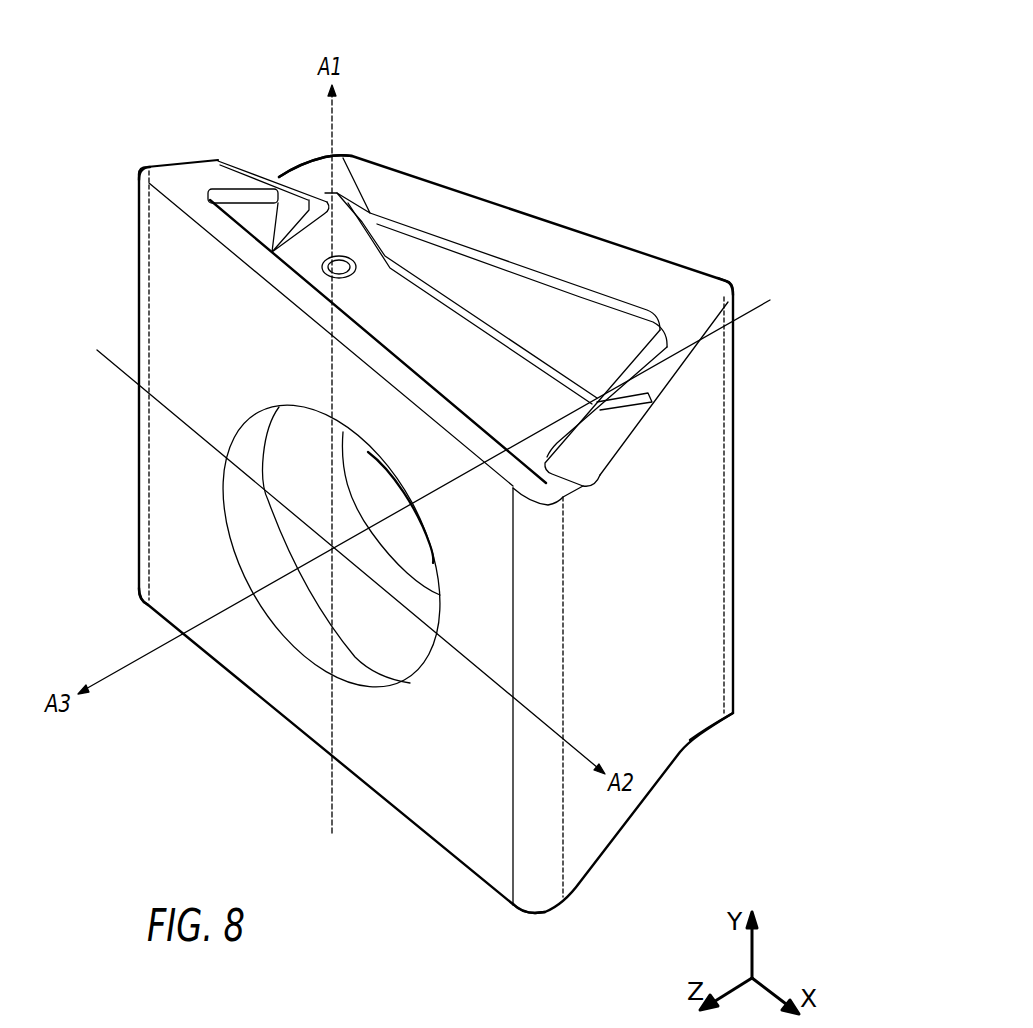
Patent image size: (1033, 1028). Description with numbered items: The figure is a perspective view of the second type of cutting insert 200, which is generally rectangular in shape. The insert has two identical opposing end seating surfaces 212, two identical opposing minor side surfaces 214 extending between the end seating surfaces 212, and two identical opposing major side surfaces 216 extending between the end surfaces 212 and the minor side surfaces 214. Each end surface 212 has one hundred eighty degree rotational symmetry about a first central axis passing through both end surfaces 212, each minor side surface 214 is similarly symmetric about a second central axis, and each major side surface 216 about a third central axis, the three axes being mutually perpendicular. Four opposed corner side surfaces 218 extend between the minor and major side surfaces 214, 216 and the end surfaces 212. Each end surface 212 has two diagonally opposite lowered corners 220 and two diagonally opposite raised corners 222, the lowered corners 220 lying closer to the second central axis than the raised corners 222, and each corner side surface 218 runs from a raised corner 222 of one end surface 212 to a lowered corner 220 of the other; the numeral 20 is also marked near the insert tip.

The cutting insert 200 is at (656, 70).
The end seating surface 212 is at (407, 288).
The minor side surface 214 is at (681, 538).
The major side surface 216 is at (213, 518).
The corner side surface 218 is at (741, 447).
The lowered corner 220 is at (324, 153).
The raised corner 222 is at (137, 163).
The cutting edge 20 is at (548, 507).